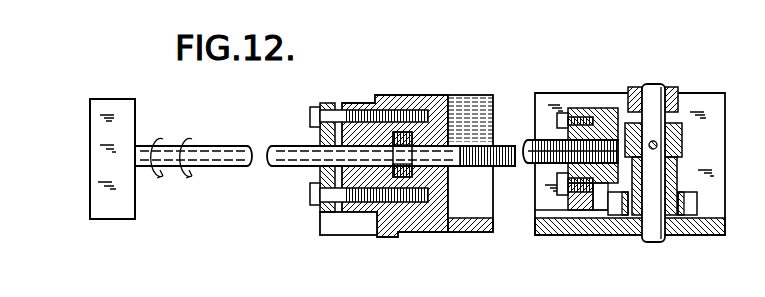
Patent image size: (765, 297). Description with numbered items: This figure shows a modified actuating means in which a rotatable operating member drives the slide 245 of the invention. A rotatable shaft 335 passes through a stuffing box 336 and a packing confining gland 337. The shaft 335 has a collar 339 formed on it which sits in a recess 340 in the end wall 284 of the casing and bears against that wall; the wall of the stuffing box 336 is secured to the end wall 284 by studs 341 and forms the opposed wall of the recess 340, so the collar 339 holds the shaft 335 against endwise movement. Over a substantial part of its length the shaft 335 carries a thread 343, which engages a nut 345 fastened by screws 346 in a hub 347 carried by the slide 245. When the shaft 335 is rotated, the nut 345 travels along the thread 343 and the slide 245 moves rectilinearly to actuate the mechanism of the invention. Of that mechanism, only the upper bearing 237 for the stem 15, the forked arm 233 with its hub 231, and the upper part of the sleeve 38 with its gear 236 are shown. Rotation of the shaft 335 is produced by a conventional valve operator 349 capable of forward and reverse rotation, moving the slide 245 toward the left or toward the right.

The valve operator 349 is at (90, 128).
The rotatable shaft 335 is at (236, 150).
The stuffing box 336 is at (388, 220).
The packing confining gland 337 is at (321, 212).
The collar 339 is at (404, 132).
The recess 340 is at (413, 175).
The studs 341 is at (358, 103).
The end wall 284 is at (452, 103).
The thread 343 is at (506, 142).
The screws 346 is at (562, 113).
The hub 347 is at (592, 108).
The nut 345 is at (588, 200).
The slide 245 is at (603, 203).
The gear 236 is at (690, 210).
The forked arm 233 is at (682, 143).
The hub 231 is at (677, 180).
The upper bearing 237 is at (669, 87).
The stem 15 is at (653, 236).
The sleeve 38 is at (672, 233).